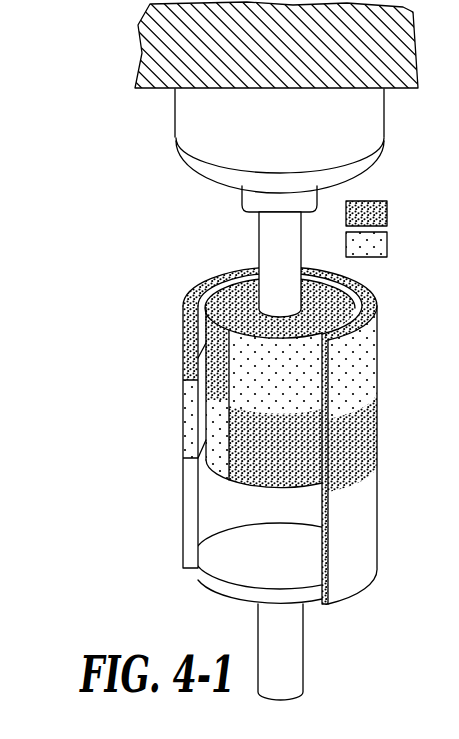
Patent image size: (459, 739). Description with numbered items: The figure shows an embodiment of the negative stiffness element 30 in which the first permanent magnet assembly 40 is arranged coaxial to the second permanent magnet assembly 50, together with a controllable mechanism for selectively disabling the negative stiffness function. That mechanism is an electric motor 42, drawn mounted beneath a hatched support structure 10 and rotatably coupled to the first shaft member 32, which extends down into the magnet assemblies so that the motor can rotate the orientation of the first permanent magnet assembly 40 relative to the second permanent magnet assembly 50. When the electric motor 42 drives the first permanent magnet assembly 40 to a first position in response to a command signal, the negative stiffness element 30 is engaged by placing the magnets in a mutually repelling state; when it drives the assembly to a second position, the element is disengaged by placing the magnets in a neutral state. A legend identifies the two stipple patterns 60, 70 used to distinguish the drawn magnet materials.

The mounting block / base structure 10 is at (148, 53).
The electric motor 42 is at (198, 118).
The first shaft member 32 is at (259, 235).
The negative stiffness element 30 is at (231, 483).
The second permanent magnet assembly 50 is at (183, 345).
The first permanent magnet assembly 40 is at (233, 473).
The first material (dense stipple) 60 is at (382, 217).
The second material (sparse stipple) 70 is at (382, 248).